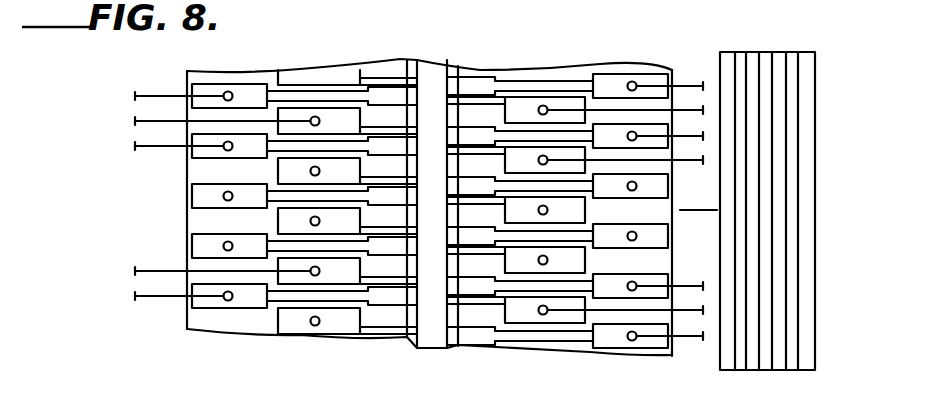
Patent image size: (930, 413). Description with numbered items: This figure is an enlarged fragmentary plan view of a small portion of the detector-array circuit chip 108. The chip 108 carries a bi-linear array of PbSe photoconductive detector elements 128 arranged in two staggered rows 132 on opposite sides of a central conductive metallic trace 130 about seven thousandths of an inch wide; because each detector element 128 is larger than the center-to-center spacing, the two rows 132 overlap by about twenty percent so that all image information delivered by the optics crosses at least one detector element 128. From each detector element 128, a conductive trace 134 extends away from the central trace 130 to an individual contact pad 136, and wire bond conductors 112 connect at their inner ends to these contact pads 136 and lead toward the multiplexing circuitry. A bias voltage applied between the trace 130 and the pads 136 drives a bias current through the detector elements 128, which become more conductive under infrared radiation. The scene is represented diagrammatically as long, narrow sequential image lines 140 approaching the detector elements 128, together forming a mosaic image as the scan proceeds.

The detector-array circuit chip 108 is at (549, 30).
The wire bond conductors 112 is at (159, 165).
The detector elements 128 is at (412, 65).
The central conductive metallic trace 130 is at (432, 72).
The staggered rows 132 is at (412, 356).
The conductive traces 134 is at (362, 108).
The contact pads 136 is at (280, 325).
The image lines 140 is at (807, 58).